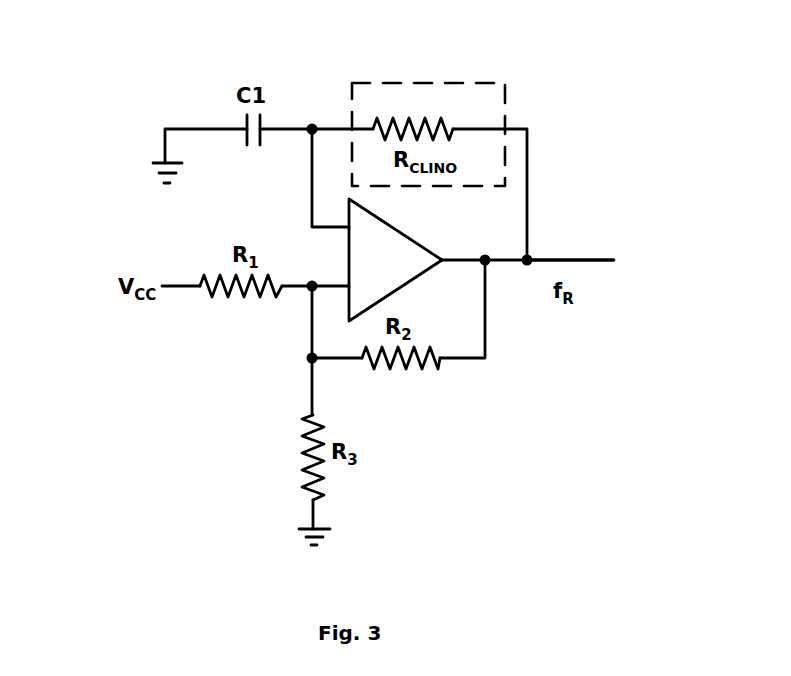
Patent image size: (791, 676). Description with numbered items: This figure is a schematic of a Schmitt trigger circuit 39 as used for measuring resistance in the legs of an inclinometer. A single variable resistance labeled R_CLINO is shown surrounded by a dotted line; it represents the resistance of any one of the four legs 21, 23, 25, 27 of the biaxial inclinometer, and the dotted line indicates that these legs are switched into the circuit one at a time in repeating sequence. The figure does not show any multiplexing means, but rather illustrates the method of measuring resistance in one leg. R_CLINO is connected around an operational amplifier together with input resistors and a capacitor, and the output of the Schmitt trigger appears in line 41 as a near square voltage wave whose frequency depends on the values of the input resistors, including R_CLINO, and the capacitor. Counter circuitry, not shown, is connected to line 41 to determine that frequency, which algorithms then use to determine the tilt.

The leg 21 is at (471, 149).
The leg 23 is at (471, 149).
The leg 25 is at (471, 149).
The leg 27 is at (430, 79).
The Schmitt trigger circuit 39 is at (581, 154).
The line 41 is at (573, 259).